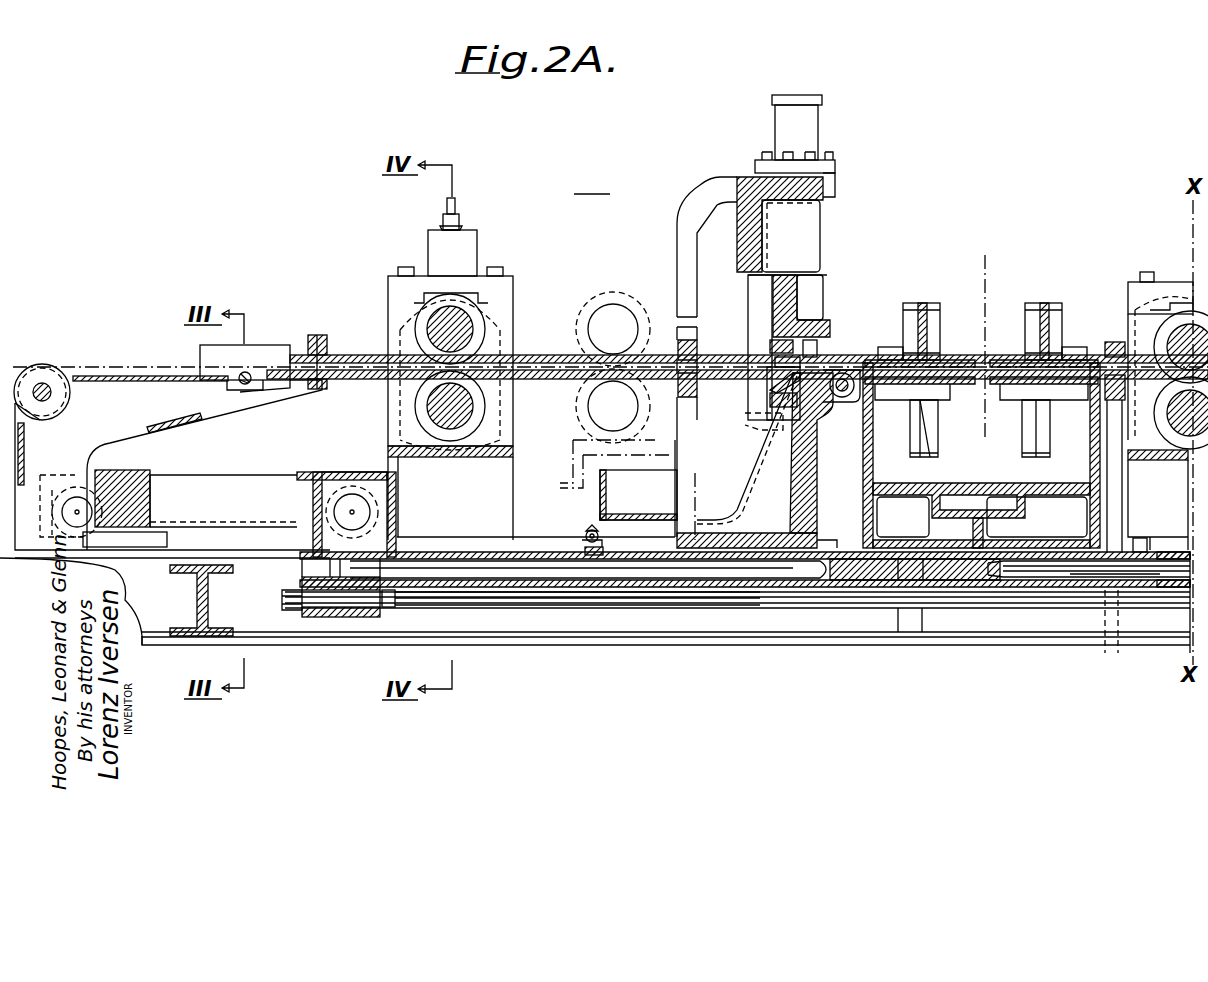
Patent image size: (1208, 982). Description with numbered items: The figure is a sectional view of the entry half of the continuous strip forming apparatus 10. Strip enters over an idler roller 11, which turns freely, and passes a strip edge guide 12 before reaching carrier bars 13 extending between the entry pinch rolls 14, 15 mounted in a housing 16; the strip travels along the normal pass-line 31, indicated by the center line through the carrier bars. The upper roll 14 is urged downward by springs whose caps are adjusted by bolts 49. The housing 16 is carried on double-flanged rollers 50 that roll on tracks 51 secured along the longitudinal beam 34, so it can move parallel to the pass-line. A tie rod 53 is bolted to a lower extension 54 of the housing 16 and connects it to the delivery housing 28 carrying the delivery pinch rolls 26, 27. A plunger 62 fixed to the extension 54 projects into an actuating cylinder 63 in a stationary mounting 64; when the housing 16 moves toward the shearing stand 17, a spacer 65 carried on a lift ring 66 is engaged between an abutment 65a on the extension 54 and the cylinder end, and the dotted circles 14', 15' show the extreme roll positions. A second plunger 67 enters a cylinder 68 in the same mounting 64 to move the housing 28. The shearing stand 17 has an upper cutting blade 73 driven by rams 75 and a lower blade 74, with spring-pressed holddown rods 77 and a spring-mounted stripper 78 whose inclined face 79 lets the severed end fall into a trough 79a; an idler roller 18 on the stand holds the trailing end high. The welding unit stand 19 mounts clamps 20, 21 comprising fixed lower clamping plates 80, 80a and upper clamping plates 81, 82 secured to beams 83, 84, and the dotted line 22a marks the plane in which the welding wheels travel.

The continuous strip forming apparatus 10 is at (592, 184).
The idler roller 11 is at (50, 354).
The strip edge guide 12 is at (265, 352).
The carrier bars 13 is at (338, 357).
The upper pinch roll 14 is at (478, 329).
The lower pinch roll 15 is at (478, 406).
The extreme position of upper pinch roll 14' is at (613, 321).
The extreme position of lower pinch roll 15' is at (594, 408).
The pinch roll housing 16 is at (388, 311).
The shearing stand 17 is at (745, 184).
The strip-supporting idler roller 18 is at (840, 422).
The welding unit stand 19 is at (863, 485).
The clamps 20 is at (905, 356).
The clamps 21 is at (1060, 357).
The vertical central plane of movement of welding wheels 22a is at (987, 268).
The upper delivery pinch roll 26 is at (1160, 323).
The lower delivery pinch roll 27 is at (1165, 457).
The pinch roll housing 28 is at (1125, 436).
The pass-line 31 is at (127, 366).
The longitudinal beam 34 is at (575, 642).
The bolts 49 is at (440, 203).
The double-flanged rollers 50 is at (57, 487).
The tracks 51 is at (268, 558).
The tie rod 53 is at (673, 603).
The lower extension of housing 54 is at (340, 617).
The plunger 62 is at (487, 598).
The actuating cylinder 63 is at (757, 580).
The stationary mounting 64 is at (870, 587).
The spacer 65 is at (587, 557).
The abutment 65a is at (415, 598).
The lift ring 66 is at (586, 533).
The plunger 67 is at (1020, 577).
The actuating cylinder 68 is at (1075, 580).
The upper cutting blade 73 is at (758, 332).
The lower cutting blade 74 is at (810, 348).
The rams 75 is at (808, 141).
The spring-pressed holddown rods 77 is at (832, 337).
The spring-mounted stripper 78 is at (770, 398).
The inclined face 79 is at (770, 380).
The trough 79a is at (770, 444).
The lower clamping plate 80 is at (952, 386).
The lower clamping plate 80a is at (1008, 386).
The upper clamping plate 81 is at (950, 358).
The upper clamping plate 82 is at (1003, 358).
The beam 83 is at (922, 294).
The beam 84 is at (1044, 303).